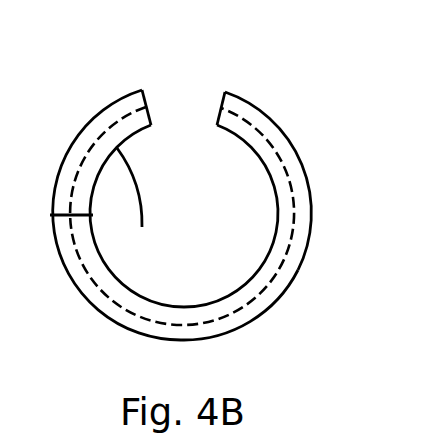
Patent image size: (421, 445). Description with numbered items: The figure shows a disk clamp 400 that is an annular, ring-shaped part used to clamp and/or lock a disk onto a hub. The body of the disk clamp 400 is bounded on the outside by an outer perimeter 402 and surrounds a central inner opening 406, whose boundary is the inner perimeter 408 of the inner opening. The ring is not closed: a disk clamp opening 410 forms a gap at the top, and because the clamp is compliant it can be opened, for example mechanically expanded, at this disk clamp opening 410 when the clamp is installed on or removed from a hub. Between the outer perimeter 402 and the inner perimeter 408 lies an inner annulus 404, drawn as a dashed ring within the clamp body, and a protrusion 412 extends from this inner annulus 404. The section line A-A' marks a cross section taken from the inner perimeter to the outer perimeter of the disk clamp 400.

The disk clamp 400 is at (73, 92).
The outer perimeter 402 is at (298, 270).
The inner annulus 404 is at (295, 192).
The inner opening 406 is at (197, 216).
The inner perimeter 408 is at (141, 204).
The disk clamp opening 410 is at (187, 98).
The protrusion 412 is at (292, 152).